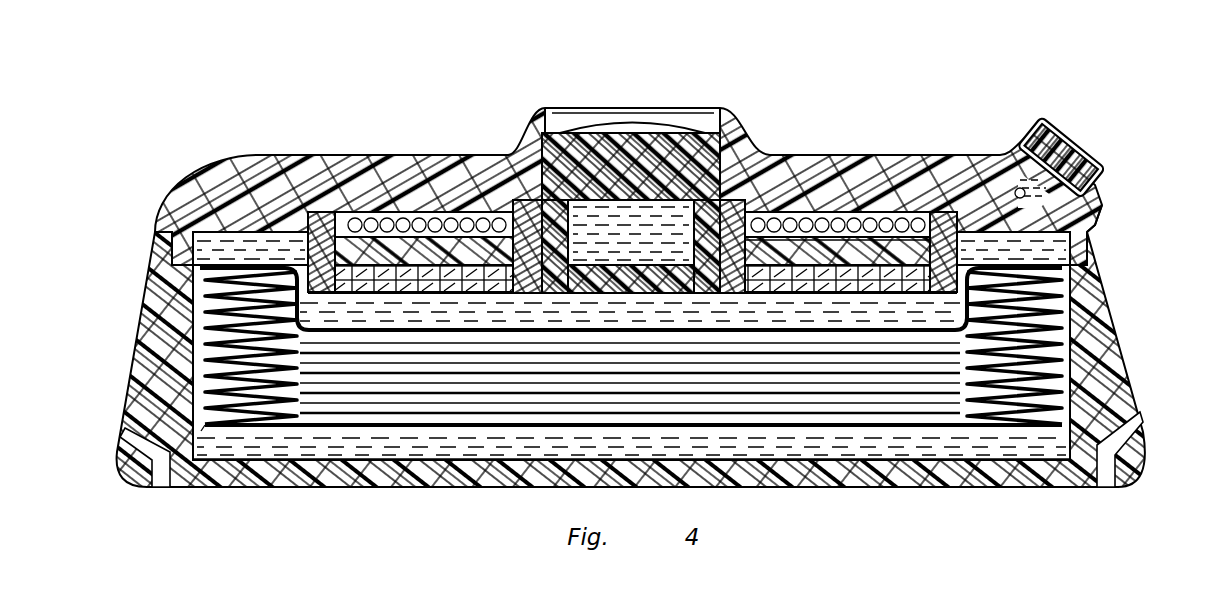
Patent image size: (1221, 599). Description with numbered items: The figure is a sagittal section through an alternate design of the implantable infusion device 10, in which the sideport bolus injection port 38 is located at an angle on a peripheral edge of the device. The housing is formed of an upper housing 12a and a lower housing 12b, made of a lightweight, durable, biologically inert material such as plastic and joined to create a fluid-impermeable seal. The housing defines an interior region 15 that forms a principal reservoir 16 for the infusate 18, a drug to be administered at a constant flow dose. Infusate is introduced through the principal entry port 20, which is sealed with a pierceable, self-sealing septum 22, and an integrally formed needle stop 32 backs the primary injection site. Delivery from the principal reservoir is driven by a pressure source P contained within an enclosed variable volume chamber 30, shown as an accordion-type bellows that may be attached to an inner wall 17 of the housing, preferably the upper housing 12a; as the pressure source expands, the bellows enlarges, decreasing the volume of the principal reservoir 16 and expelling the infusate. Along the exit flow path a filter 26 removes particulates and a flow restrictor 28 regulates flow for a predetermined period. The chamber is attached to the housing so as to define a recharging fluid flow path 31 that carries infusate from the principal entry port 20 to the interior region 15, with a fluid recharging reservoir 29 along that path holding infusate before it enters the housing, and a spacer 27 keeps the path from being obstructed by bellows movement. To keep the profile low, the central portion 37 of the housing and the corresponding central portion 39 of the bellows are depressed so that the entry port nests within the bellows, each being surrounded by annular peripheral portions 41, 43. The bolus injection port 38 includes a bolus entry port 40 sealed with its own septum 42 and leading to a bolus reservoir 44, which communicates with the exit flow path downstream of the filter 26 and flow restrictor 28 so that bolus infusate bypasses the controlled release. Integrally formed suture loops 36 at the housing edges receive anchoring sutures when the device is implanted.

The device 10 is at (366, 112).
The upper housing 12a is at (222, 163).
The lower housing 12b is at (130, 372).
The interior region 15 is at (1040, 450).
The principal reservoir 16 is at (1062, 310).
The inner wall 17 is at (1067, 343).
The infusate 18 is at (962, 440).
The principal entry port 20 is at (570, 133).
The septum 22 is at (702, 130).
The filter 26 is at (455, 252).
The spacer 27 is at (798, 252).
The flow restrictor 28 is at (410, 222).
The fluid recharging reservoir 29 is at (606, 228).
The variable volume chamber 30 is at (330, 428).
The recharging fluid flow path 31 is at (650, 240).
The needle stop 32 is at (765, 328).
The suture loop 36 is at (158, 488).
The central portion 37 is at (330, 228).
The bolus injection port 38 is at (1093, 152).
The central portion of bellows 39 is at (480, 282).
The bolus entry port 40 is at (1093, 147).
The annular peripheral portion 41 is at (240, 257).
The septum 42 is at (1072, 168).
The annular peripheral portion of bellows 43 is at (262, 284).
The bolus reservoir 44 is at (1078, 226).
The pressure source P is at (755, 380).